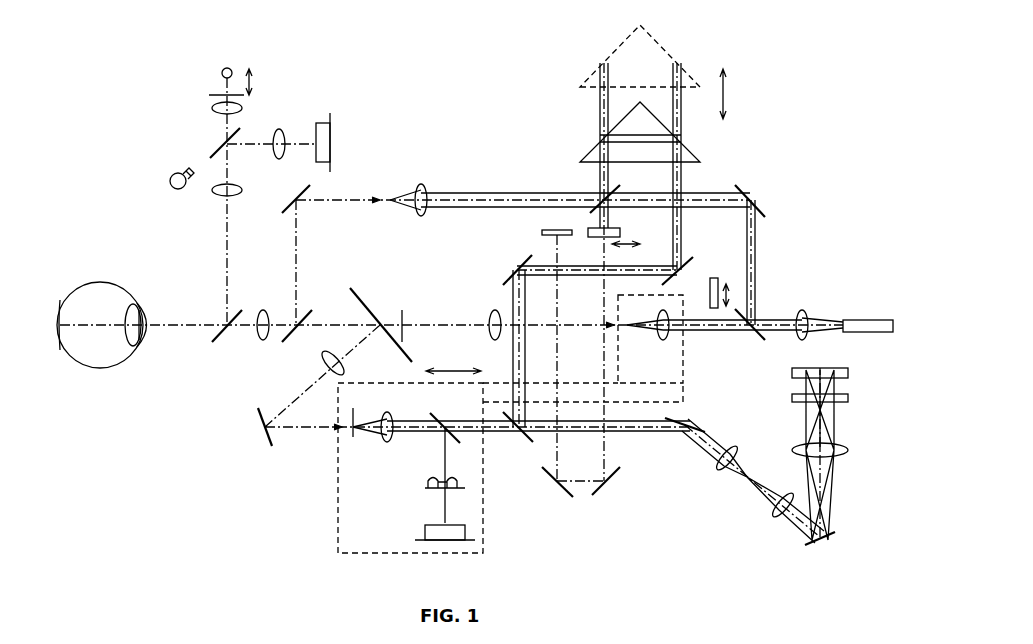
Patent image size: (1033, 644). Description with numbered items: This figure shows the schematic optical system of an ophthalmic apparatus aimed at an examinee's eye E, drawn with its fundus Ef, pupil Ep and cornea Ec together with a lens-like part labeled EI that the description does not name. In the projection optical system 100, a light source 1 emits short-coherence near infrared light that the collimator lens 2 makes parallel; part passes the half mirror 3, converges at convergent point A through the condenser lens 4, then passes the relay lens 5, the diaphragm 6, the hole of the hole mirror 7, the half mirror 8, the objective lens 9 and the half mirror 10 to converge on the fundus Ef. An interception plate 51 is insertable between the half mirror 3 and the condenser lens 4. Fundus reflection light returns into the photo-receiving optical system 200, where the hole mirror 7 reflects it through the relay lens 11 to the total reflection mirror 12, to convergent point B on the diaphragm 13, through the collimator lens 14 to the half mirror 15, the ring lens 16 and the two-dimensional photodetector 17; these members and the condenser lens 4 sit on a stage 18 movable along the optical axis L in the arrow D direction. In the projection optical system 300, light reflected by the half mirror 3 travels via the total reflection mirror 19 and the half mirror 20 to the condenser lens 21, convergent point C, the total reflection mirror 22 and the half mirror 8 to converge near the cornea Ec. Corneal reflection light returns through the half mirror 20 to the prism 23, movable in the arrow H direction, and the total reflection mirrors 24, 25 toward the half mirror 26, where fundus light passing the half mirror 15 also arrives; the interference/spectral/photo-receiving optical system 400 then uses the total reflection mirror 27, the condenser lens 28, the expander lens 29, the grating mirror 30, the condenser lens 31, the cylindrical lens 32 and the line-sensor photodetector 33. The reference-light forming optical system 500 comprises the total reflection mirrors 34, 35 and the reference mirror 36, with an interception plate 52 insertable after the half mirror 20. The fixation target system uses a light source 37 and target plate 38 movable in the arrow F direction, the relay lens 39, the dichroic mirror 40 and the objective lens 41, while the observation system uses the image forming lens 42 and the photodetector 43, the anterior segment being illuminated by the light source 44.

The light source 1 is at (864, 320).
The collimator lens 2 is at (806, 310).
The half mirror 3 is at (757, 310).
The condenser lens 4 is at (664, 340).
The relay lens 5 is at (491, 311).
The diaphragm 6 is at (405, 313).
The hole mirror 7 is at (360, 292).
The half mirror 8 is at (292, 337).
The objective lens 9 is at (262, 341).
The half mirror 10 is at (215, 337).
The relay lens 11 is at (343, 364).
The total reflection mirror 12 is at (266, 446).
The diaphragm 13 is at (353, 441).
The collimator lens 14 is at (393, 440).
The half mirror 15 is at (438, 418).
The ring lens 16 is at (450, 478).
The two-dimensional photodetector 17 is at (426, 525).
The stage 18 is at (485, 514).
The total reflection mirror 19 is at (748, 192).
The half mirror 20 is at (595, 207).
The condenser lens 21 is at (421, 216).
The total reflection mirror 22 is at (284, 212).
The prism 23 is at (697, 158).
The total reflection mirror 24 is at (668, 283).
The total reflection mirror 25 is at (517, 266).
The half mirror 26 is at (523, 440).
The total reflection mirror 27 is at (685, 424).
The condenser lens 28 is at (719, 470).
The expander lens 29 is at (777, 516).
The grating mirror 30 is at (835, 535).
The condenser lens 31 is at (849, 452).
The cylindrical lens 32 is at (849, 399).
The one-dimensional photodetector 33 is at (849, 373).
The total reflection mirror 34 is at (612, 488).
The total reflection mirror 35 is at (557, 493).
The reference mirror 36 is at (545, 231).
The light source 37 is at (223, 69).
The target plate 38 is at (215, 94).
The relay lens 39 is at (212, 106).
The dichroic mirror 40 is at (218, 148).
The objective lens 41 is at (214, 192).
The image forming lens 42 is at (279, 129).
The two-dimensional photodetector 43 is at (322, 122).
The light source 44 is at (186, 168).
The interception plate 51 is at (716, 277).
The interception plate 52 is at (621, 229).
The projection optical system 100 is at (703, 355).
The photo-receiving optical system 200 is at (319, 486).
The projection optical system 300 is at (470, 176).
The interference/spectral/photo-receiving optical system 400 is at (738, 500).
The reference-light forming optical system 500 is at (592, 527).
The examinee's eye E is at (88, 355).
The fundus Ef is at (60, 315).
The crystalline lens EI is at (128, 306).
The pupil Ep is at (148, 320).
The cornea Ec is at (143, 346).
The convergent point A is at (628, 332).
The convergent point B is at (355, 420).
The convergent point C is at (384, 218).
The arrow D direction D is at (453, 358).
The arrow F direction F is at (258, 75).
The arrow H direction H is at (733, 94).
The optical axis L is at (343, 200).